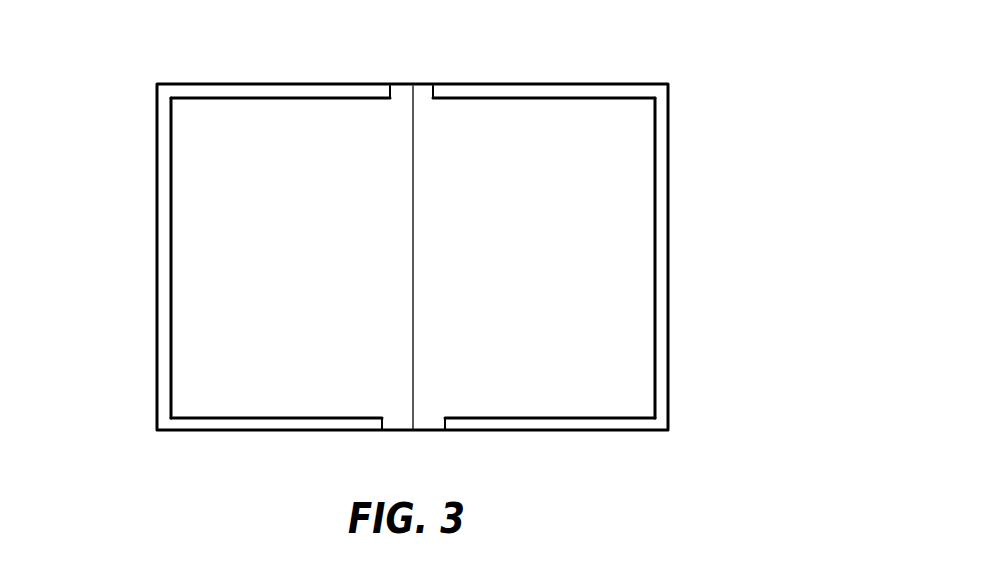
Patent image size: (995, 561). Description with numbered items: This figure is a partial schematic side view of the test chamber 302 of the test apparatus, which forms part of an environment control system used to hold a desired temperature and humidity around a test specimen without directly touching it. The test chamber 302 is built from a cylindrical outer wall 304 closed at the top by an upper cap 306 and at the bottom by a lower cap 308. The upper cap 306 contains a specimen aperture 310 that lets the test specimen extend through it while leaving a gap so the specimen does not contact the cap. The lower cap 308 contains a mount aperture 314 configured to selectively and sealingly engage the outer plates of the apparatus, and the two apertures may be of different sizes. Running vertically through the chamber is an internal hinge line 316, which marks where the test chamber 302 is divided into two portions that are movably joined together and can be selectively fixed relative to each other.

The test chamber 302 is at (760, 130).
The cylindrical outer wall 304 is at (164, 253).
The upper cap 306 is at (513, 92).
The lower cap 308 is at (552, 425).
The specimen aperture 310 is at (392, 96).
The mount aperture 314 is at (443, 422).
The internal hinge line 316 is at (413, 259).